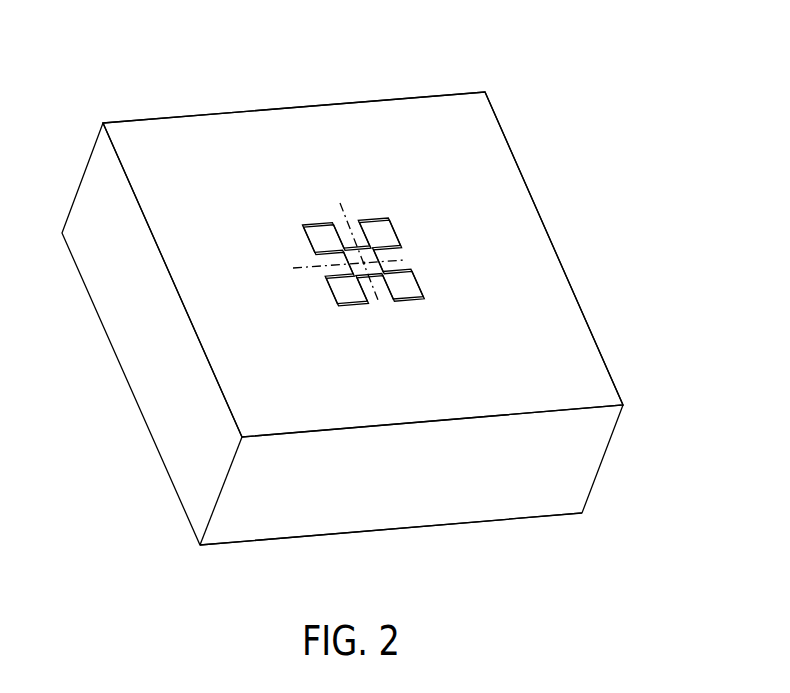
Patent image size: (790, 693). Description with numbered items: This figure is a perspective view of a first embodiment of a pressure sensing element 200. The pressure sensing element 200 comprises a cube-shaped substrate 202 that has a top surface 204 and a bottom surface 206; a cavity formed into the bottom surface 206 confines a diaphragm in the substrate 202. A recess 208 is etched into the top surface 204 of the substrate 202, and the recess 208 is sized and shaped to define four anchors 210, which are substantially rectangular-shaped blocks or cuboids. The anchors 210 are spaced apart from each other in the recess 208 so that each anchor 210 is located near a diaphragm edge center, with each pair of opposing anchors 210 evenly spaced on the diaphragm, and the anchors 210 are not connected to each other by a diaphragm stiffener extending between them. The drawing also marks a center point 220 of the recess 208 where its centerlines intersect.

The pressure sensing element 200 is at (562, 73).
The substrate 202 is at (517, 160).
The top surface 204 is at (177, 133).
The bottom surface 206 is at (264, 550).
The recess 208 is at (412, 222).
The anchors 210 is at (352, 235).
The center point 220 is at (364, 268).